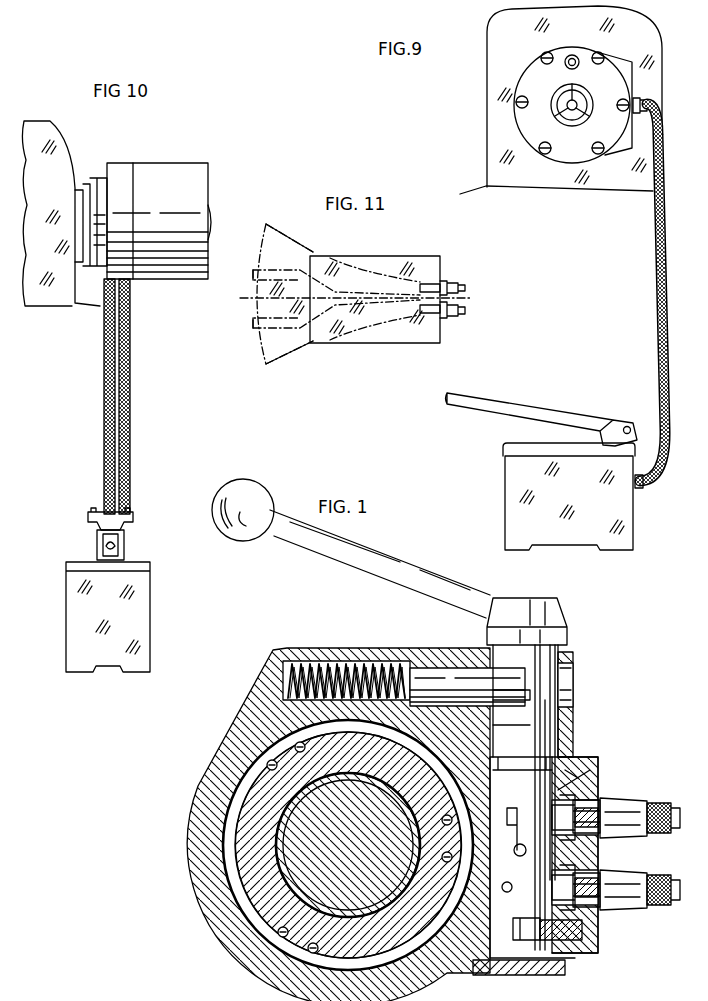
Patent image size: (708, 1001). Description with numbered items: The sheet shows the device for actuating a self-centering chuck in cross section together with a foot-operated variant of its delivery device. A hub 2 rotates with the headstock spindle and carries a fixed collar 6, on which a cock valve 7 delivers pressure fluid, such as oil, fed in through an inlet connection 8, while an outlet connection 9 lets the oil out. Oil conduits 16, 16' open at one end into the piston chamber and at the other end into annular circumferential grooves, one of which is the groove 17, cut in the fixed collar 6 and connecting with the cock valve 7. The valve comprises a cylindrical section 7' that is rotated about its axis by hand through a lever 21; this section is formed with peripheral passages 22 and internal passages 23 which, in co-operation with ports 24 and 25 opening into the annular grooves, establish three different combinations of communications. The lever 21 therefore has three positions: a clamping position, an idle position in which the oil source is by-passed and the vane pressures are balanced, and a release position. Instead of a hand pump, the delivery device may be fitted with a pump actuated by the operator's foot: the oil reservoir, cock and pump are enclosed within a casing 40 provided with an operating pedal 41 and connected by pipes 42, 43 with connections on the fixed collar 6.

In FIG. 1, the hub 2 is at (275, 885).
In FIG. 9, the fixed collar 6 is at (631, 62).
In FIG. 1, the fixed collar 6 is at (217, 913).
In FIG. 1, the cock valve 7 is at (541, 621).
In FIG. 1, the cylindrical section 7' is at (535, 963).
In FIG. 1, the inlet connection 8 is at (627, 893).
In FIG. 1, the outlet connection 9 is at (627, 813).
In FIG. 1, the oil conduit 16 is at (317, 845).
In FIG. 1, the oil conduit 16' is at (321, 826).
In FIG. 1, the annular circumferential groove 17 is at (230, 810).
In FIG. 1, the lever 21 is at (222, 513).
In FIG. 1, the peripheral passages 22 is at (537, 823).
In FIG. 1, the internal passages 23 is at (511, 890).
In FIG. 1, the port 24 is at (510, 819).
In FIG. 1, the port 25 is at (538, 924).
In FIG. 10, the casing 40 is at (83, 606).
In FIG. 11, the casing 40 is at (423, 273).
In FIG. 9, the casing 40 is at (522, 492).
In FIG. 10, the operating pedal 41 is at (90, 517).
In FIG. 11, the operating pedal 41 is at (255, 306).
In FIG. 9, the operating pedal 41 is at (473, 396).
In FIG. 10, the pipe 42 is at (125, 384).
In FIG. 11, the pipe 42 is at (460, 323).
In FIG. 9, the pipe 42 is at (656, 295).
In FIG. 10, the pipe 43 is at (105, 390).
In FIG. 11, the pipe 43 is at (463, 283).